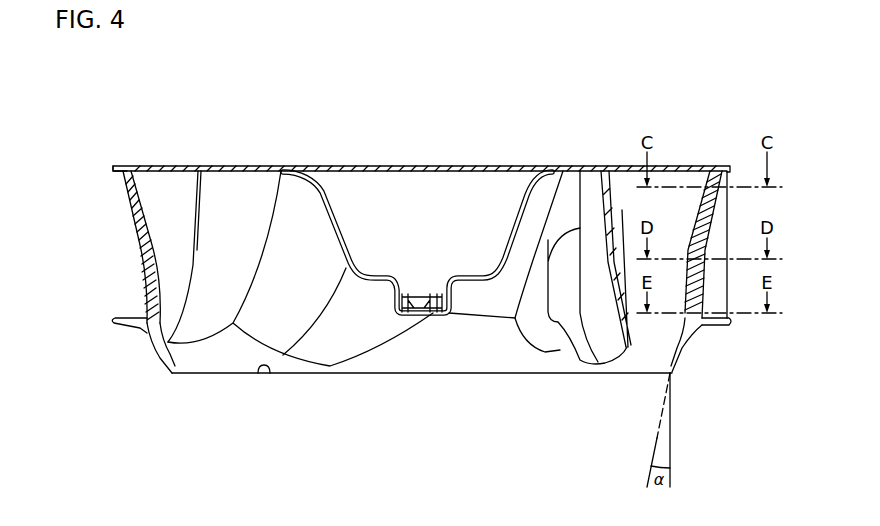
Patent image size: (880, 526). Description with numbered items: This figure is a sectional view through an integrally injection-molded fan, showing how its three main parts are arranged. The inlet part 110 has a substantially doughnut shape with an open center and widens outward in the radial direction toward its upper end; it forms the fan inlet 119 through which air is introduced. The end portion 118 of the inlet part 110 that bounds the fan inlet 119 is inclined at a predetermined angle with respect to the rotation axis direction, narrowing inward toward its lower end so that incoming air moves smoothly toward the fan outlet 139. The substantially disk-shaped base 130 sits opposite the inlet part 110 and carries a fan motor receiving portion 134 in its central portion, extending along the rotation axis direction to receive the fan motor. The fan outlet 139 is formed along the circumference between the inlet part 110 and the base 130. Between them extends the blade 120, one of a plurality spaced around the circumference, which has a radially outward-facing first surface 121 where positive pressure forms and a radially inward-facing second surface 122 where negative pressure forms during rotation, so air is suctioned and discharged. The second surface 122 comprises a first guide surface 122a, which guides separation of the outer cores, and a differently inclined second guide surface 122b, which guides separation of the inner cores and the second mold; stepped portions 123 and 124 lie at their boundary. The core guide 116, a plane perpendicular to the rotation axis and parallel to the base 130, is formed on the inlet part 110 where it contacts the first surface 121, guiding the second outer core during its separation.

The inlet part 110 is at (435, 382).
The core guide 116 is at (128, 318).
The end portion 118 is at (674, 374).
The fan inlet 119 is at (258, 373).
The blade 120 is at (123, 222).
The first surface 121 is at (609, 190).
The second surface 122 is at (593, 113).
The first guide surface 122a is at (560, 216).
The second guide surface 122b is at (592, 205).
The stepped portion 123 is at (200, 200).
The stepped portion 124 is at (558, 323).
The base 130 is at (243, 158).
The fan motor receiving portion 134 is at (329, 210).
The fan outlet 139 is at (113, 169).